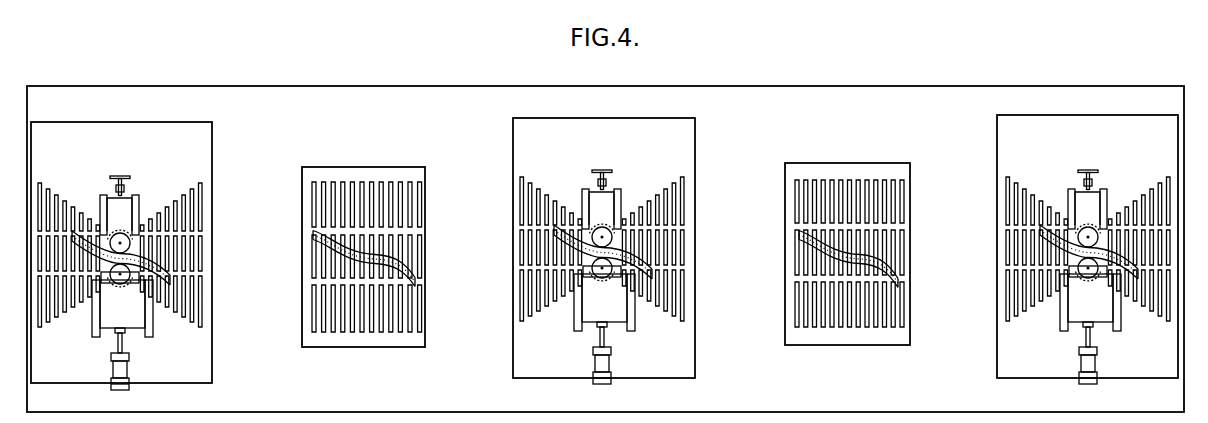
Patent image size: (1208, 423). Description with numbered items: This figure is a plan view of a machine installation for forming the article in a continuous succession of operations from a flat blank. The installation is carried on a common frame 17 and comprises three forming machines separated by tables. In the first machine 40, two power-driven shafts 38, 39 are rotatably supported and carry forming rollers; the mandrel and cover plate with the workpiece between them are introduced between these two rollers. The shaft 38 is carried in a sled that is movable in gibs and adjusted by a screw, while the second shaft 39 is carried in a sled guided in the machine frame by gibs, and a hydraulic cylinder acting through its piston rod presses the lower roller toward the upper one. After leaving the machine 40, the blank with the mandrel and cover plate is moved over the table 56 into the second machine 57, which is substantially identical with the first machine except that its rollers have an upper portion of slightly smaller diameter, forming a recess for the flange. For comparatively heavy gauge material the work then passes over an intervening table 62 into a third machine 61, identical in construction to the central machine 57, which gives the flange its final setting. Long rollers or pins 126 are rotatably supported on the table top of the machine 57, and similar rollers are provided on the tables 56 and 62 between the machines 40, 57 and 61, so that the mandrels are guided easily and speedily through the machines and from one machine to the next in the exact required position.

The conveyor frame 17 is at (350, 403).
The machine 40 is at (202, 133).
The table 56 is at (382, 172).
The second machine 57 is at (552, 123).
The third machine 61 is at (1033, 120).
The table 62 is at (883, 168).
The shaft 38 is at (139, 225).
The shaft 39 is at (99, 302).
The long rollers or pins 126 is at (545, 255).